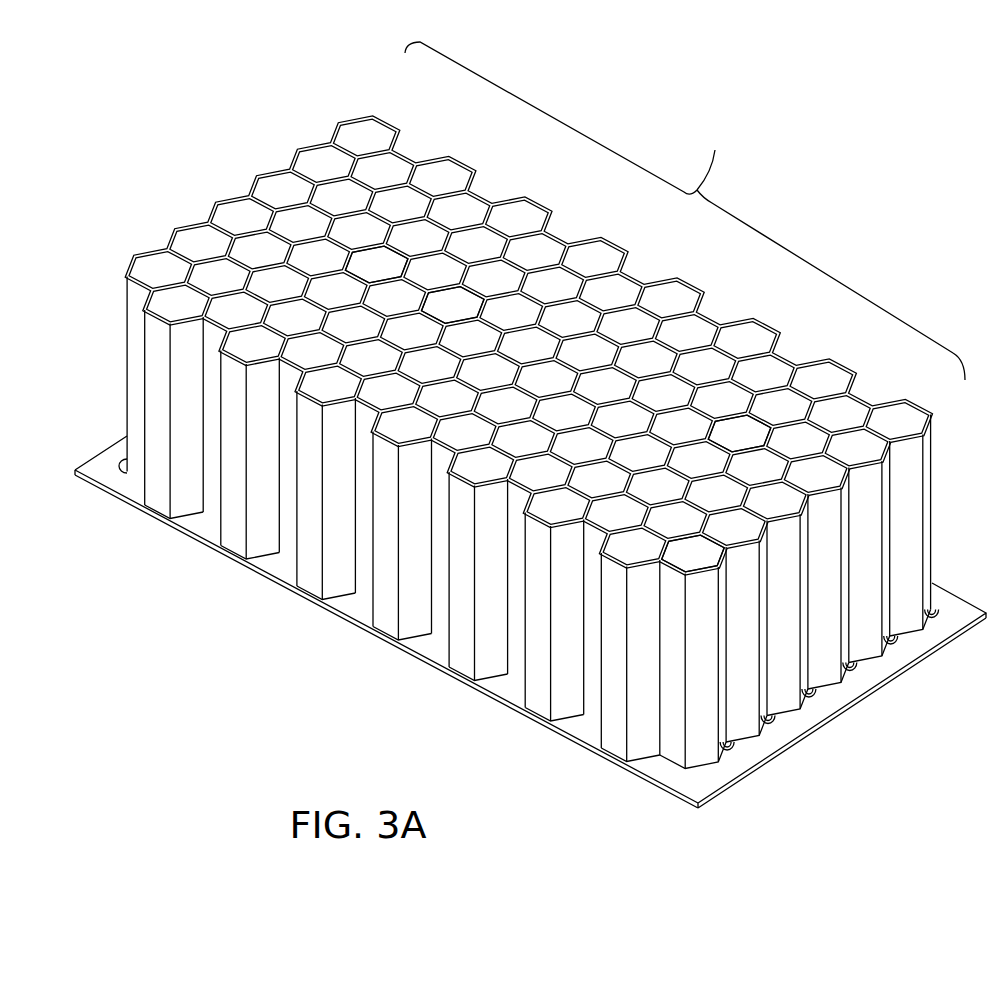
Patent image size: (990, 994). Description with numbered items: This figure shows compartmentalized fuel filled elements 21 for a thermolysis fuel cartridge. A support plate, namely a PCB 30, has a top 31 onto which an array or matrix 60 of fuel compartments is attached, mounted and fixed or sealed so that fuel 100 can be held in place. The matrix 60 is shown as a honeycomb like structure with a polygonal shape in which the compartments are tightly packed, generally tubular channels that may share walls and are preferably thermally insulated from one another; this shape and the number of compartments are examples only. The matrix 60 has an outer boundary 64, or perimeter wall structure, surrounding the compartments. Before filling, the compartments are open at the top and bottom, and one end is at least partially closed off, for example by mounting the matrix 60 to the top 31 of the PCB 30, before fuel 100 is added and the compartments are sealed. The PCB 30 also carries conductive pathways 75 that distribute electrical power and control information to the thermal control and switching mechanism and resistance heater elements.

The honeycomb cell array 21 is at (237, 221).
The fuel 100 is at (447, 316).
The matrix 60 is at (157, 382).
The conductive pathways 75 is at (902, 645).
The PCB 30 is at (447, 676).
The top 31 is at (92, 470).
The outer boundary 64 is at (685, 211).